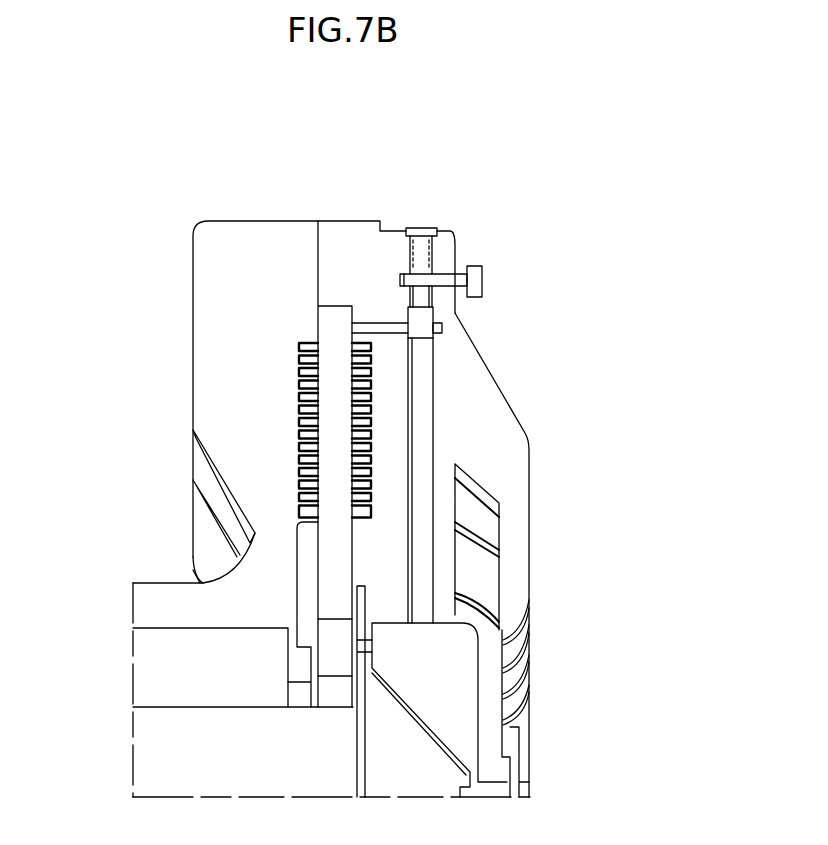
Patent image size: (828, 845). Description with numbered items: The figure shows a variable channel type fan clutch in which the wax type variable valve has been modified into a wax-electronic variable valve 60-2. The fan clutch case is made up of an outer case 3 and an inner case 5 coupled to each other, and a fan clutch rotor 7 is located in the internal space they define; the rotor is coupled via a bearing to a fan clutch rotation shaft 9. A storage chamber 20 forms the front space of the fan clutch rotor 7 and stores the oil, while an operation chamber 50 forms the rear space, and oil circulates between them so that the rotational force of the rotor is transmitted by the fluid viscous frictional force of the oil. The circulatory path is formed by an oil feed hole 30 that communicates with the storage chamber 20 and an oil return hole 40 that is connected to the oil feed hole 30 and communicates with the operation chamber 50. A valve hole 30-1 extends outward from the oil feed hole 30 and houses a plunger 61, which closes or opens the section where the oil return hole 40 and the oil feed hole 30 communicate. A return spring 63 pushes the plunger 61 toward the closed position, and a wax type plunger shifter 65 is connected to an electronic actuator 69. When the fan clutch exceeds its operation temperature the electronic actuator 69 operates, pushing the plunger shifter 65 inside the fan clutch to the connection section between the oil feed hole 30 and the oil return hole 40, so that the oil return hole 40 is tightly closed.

The outer case 3 is at (260, 460).
The inner case 5 is at (512, 555).
The fan clutch rotor 7 is at (333, 570).
The fan clutch rotation shaft 9 is at (178, 760).
The storage chamber 20 is at (420, 668).
The oil feed hole 30 is at (422, 453).
The valve hole 30-1 is at (404, 299).
The oil return hole 40 is at (382, 327).
The operation chamber 50 is at (297, 410).
The wax-electronic variable valve 60-2 is at (545, 247).
The plunger 61 is at (500, 322).
The return spring 63 is at (431, 250).
The wax type plunger shifter 65 is at (440, 278).
The electronic actuator 69 is at (474, 281).